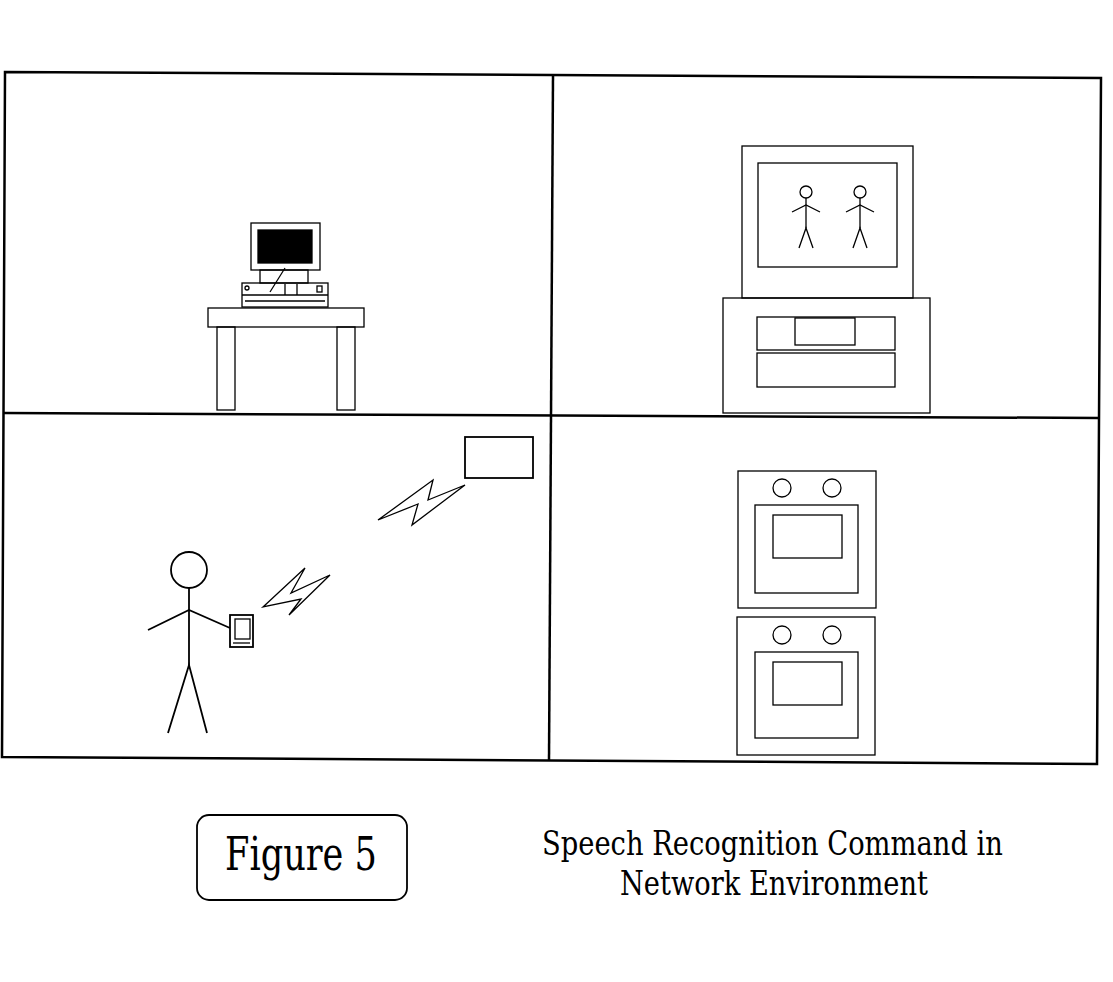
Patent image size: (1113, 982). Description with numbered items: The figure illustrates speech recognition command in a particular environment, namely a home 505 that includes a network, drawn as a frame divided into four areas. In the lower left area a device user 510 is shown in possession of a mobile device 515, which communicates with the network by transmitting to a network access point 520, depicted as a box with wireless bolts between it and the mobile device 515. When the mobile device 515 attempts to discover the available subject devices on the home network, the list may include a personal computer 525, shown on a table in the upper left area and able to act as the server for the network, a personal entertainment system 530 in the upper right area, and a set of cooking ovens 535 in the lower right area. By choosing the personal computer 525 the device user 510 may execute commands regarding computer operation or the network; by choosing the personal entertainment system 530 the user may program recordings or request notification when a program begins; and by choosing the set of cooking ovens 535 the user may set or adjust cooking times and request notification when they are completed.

The home 505 is at (225, 69).
The device user 510 is at (190, 533).
The mobile device 515 is at (245, 655).
The network access point 520 is at (463, 460).
The personal computer 525 is at (283, 210).
The personal entertainment system 530 is at (703, 265).
The set of cooking ovens 535 is at (716, 592).